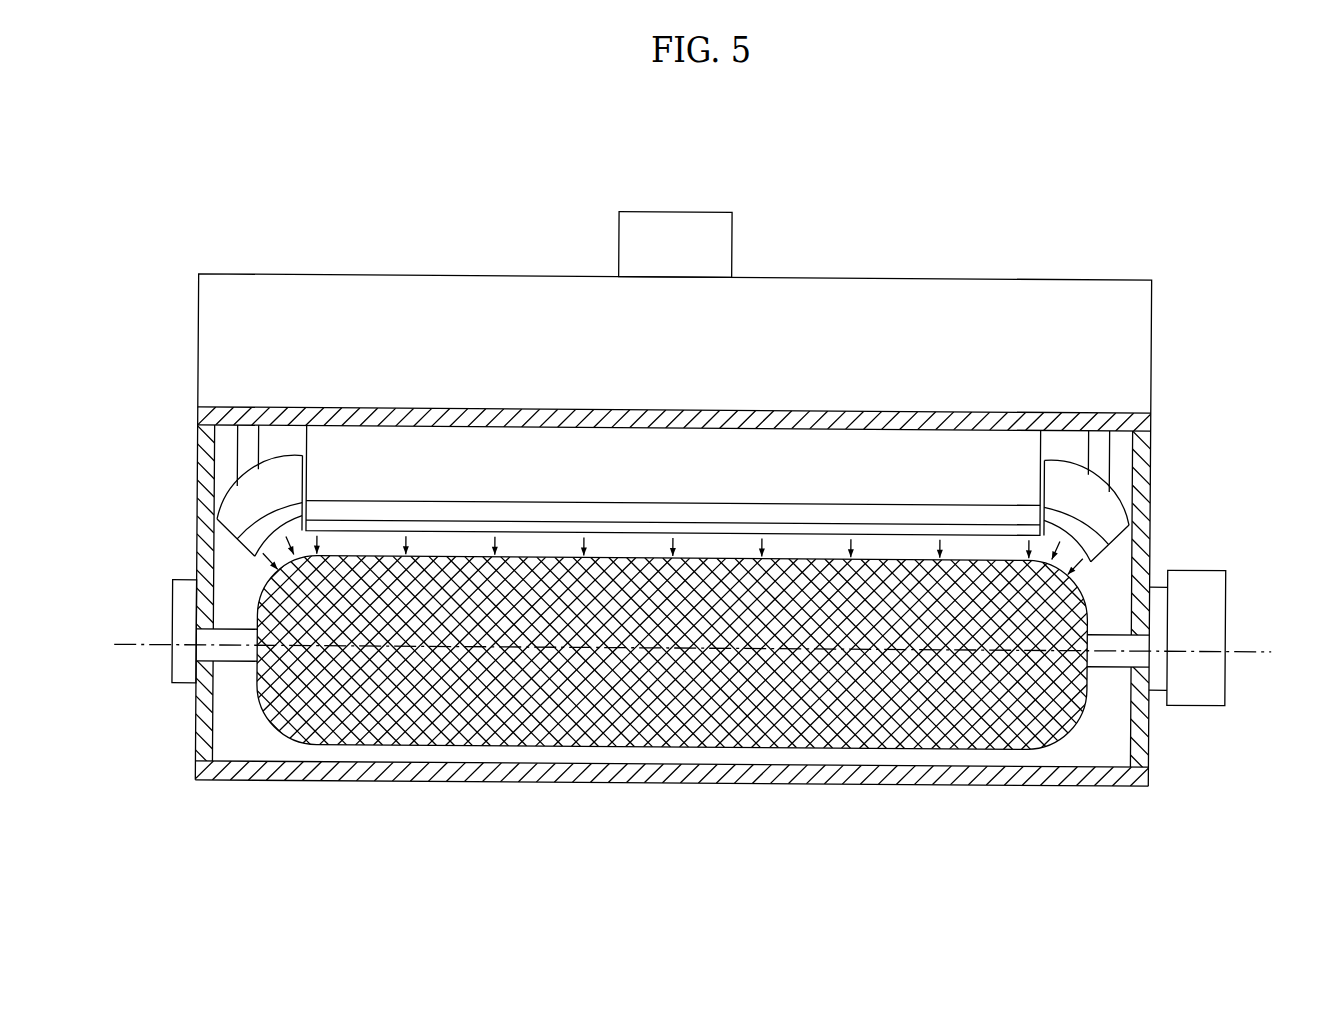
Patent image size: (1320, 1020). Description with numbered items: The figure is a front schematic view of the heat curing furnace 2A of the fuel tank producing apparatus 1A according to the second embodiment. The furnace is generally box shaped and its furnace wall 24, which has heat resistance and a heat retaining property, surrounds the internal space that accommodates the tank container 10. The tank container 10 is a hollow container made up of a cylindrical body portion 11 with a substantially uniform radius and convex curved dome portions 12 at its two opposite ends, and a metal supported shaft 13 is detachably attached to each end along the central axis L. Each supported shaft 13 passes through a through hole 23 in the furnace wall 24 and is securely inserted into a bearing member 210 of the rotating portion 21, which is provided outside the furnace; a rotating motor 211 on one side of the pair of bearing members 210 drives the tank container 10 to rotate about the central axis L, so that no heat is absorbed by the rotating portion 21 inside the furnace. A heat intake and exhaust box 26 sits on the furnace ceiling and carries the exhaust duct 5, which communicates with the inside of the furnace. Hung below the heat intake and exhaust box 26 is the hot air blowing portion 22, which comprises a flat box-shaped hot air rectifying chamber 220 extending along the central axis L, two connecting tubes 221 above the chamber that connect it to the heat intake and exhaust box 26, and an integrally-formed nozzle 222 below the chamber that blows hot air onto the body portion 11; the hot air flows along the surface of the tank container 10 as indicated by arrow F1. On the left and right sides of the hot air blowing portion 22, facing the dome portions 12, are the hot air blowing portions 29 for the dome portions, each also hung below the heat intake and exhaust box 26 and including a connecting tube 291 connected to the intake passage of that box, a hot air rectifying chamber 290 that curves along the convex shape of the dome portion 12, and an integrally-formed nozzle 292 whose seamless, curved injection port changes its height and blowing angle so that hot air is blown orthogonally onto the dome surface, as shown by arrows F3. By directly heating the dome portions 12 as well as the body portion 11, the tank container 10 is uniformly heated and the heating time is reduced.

The fuel tank producing apparatus 1A is at (1172, 197).
The heat curing furnace 2A is at (1155, 338).
The exhaust duct 5 is at (687, 238).
The tank container 10 is at (666, 697).
The body portion 11 is at (685, 741).
The dome portion 12 is at (270, 712).
The supported shaft 13 is at (247, 660).
The rotating portion 21 is at (701, 646).
The bearing member 210 is at (175, 585).
The rotating motor 211 is at (1215, 680).
The hot air blowing portion 22 is at (662, 427).
The hot air rectifying chamber 220 is at (572, 480).
The connecting tube 221 is at (480, 409).
The integrally-formed nozzle 222 is at (430, 516).
The through hole 23 is at (196, 628).
The furnace wall 24 is at (214, 506).
The heat intake and exhaust box 26 is at (194, 330).
The hot air blowing portion for the dome portion 29 is at (672, 461).
The hot air rectifying chamber 290 is at (294, 455).
The connecting tube 291 is at (238, 443).
The integrally-formed nozzle 292 is at (237, 554).
The arrow F1 is at (948, 540).
The arrows F3 is at (260, 576).
The central axis L is at (704, 648).